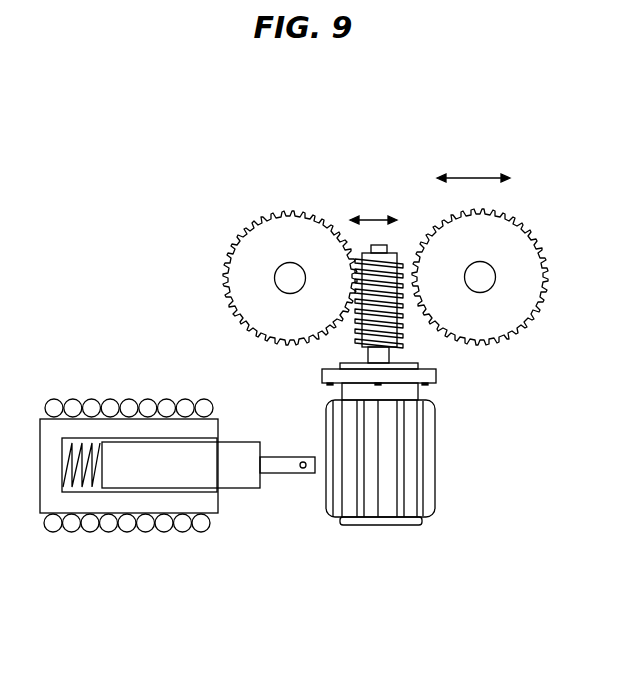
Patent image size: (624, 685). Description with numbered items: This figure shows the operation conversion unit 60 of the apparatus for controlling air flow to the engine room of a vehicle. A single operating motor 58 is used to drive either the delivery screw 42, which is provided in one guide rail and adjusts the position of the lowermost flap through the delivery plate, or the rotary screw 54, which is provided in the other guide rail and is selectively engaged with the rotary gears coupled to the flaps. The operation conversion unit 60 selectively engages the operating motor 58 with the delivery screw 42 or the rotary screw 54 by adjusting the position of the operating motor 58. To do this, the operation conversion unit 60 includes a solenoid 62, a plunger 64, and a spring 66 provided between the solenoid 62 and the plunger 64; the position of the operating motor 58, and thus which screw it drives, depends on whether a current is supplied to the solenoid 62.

The delivery screw 42 is at (257, 238).
The rotary screw 54 is at (510, 313).
The operating motor 58 is at (423, 501).
The operation conversion unit 60 is at (177, 497).
The solenoid 62 is at (70, 525).
The plunger 64 is at (238, 483).
The spring 66 is at (75, 452).